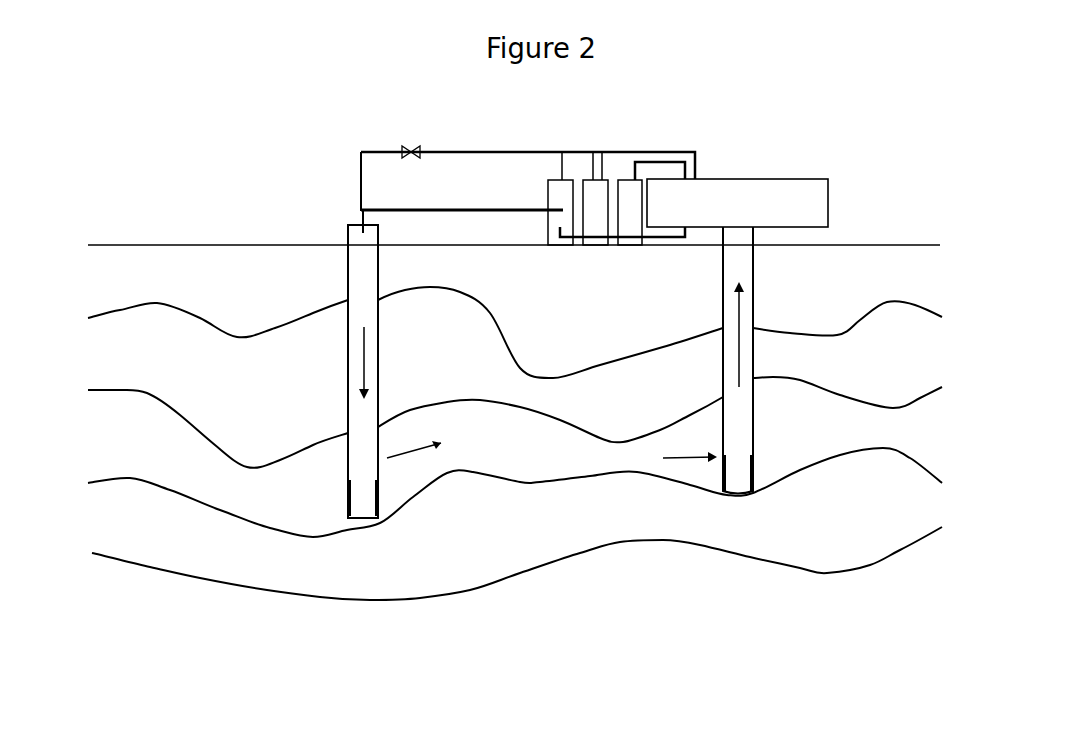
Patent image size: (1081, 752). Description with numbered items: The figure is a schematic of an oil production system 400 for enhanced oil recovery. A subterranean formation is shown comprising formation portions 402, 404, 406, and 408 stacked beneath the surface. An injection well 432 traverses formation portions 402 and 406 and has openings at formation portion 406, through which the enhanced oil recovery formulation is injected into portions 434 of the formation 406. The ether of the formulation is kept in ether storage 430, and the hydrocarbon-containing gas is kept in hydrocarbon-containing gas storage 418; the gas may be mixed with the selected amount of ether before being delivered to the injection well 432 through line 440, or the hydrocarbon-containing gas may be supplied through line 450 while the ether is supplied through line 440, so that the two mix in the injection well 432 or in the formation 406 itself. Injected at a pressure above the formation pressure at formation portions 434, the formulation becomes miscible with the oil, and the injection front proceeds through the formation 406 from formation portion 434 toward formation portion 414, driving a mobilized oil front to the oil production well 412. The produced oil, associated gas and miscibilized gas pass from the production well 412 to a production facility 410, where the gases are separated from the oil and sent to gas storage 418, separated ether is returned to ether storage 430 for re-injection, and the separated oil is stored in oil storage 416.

The subsurface fluid treatment and injection system 400 is at (362, 140).
The formation portion 402 is at (515, 329).
The formation portion 404 is at (515, 404).
The formation portion 406 is at (515, 471).
The formation portion 408 is at (517, 539).
The production facility 410 is at (719, 210).
The oil production well 412 is at (753, 268).
The formation portion 414 is at (767, 462).
The oil storage 416 is at (627, 197).
The hydrocarbon-containing gas storage 418 is at (598, 198).
The ether storage 430 is at (560, 192).
The injection well 432 is at (363, 277).
The formation portions 434 is at (397, 480).
The line 440 is at (447, 208).
The line 450 is at (522, 152).